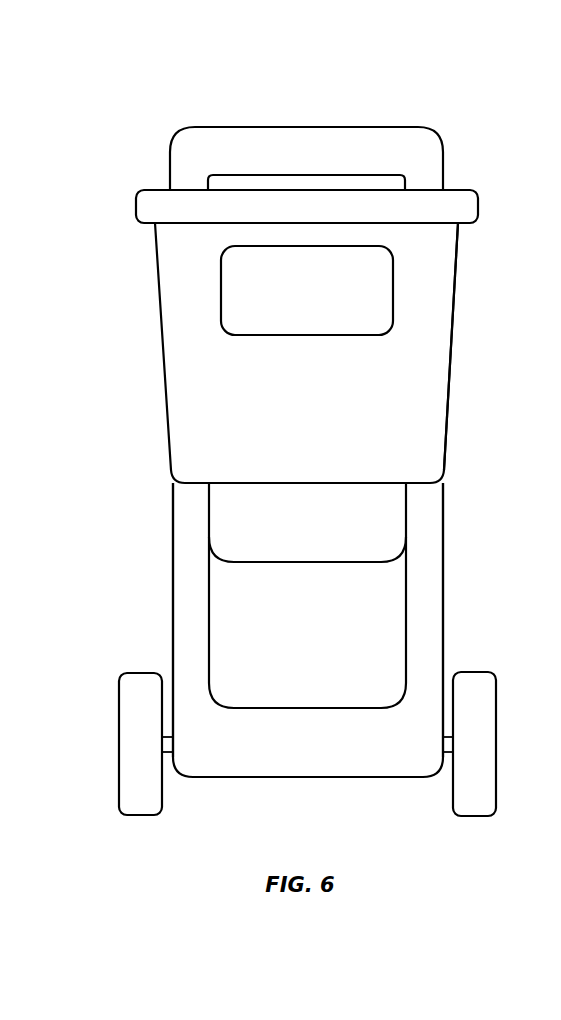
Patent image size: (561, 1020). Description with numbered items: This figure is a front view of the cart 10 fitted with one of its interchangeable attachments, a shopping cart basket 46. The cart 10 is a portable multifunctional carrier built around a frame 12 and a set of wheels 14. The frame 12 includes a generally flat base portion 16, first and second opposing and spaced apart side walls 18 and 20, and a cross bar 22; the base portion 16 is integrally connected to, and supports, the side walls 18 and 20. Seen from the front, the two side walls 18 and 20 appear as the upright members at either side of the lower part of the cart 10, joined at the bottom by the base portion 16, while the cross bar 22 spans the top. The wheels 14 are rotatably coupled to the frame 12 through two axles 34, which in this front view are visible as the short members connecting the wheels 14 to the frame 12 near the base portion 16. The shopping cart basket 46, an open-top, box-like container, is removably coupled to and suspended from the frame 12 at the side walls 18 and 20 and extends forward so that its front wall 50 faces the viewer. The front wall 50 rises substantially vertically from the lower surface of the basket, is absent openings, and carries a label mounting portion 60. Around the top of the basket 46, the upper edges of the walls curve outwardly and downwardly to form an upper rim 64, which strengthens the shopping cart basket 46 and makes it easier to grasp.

The cart 10 is at (110, 82).
The cross bar 22 is at (268, 135).
The upper rim 64 is at (140, 213).
The shopping cart basket 46 is at (172, 368).
The front wall 50 is at (437, 320).
The label mounting portion 60 is at (232, 315).
The frame 12 is at (445, 543).
The first side wall 18 is at (180, 562).
The second side wall 20 is at (440, 640).
The base portion 16 is at (282, 767).
The wheels 14 is at (143, 672).
The axles 34 is at (448, 752).